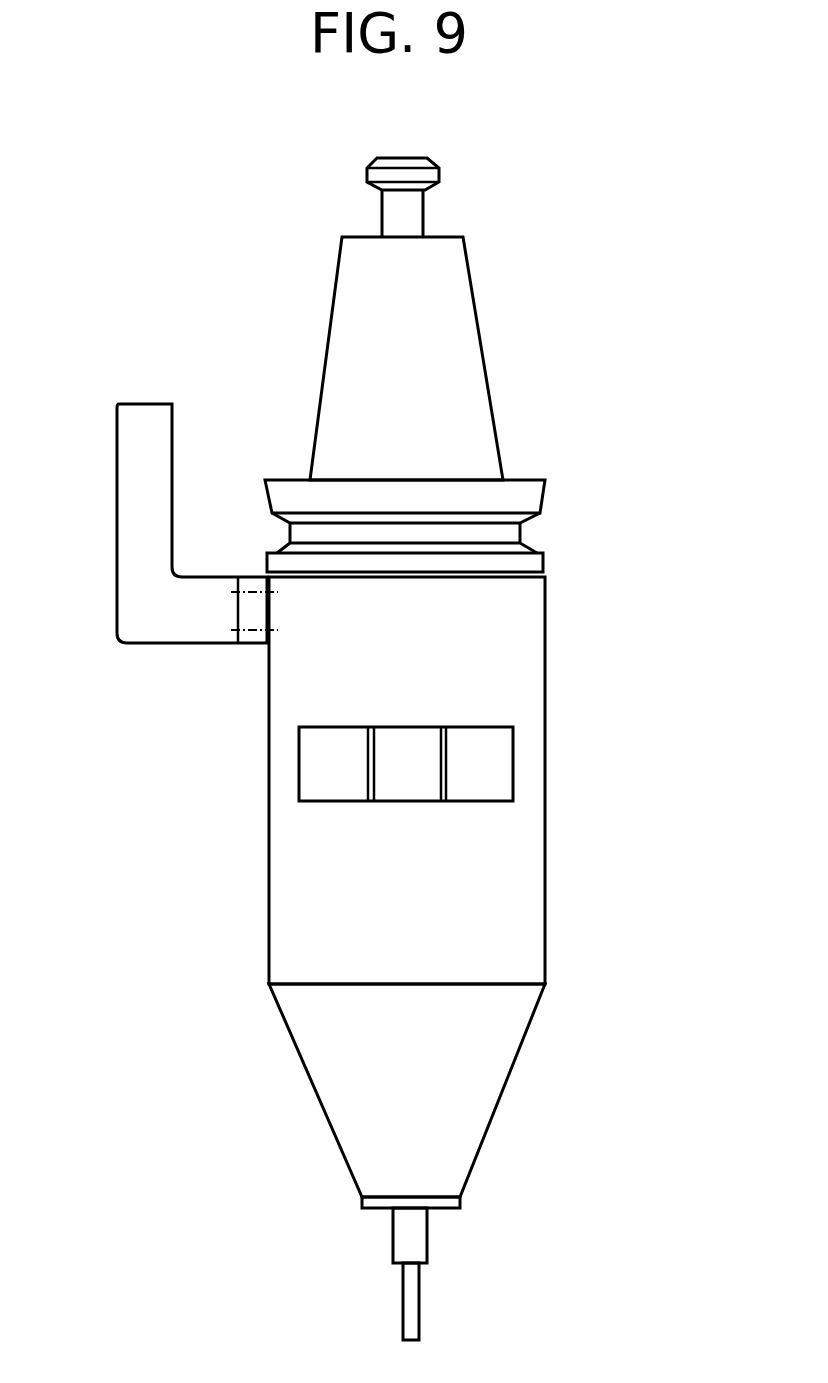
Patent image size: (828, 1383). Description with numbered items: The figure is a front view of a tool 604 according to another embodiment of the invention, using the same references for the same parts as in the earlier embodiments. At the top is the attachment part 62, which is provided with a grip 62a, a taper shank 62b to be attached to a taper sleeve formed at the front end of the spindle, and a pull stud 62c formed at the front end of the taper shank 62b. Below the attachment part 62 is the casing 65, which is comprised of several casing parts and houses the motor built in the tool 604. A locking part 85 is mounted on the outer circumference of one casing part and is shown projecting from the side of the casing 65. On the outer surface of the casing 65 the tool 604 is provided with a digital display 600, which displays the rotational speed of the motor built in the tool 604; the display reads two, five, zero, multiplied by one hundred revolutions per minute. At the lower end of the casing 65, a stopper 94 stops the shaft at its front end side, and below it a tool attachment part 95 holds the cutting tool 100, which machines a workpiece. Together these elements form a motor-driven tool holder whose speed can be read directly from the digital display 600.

The attachment part 62 is at (512, 443).
The grip 62a is at (520, 531).
The taper shank 62b is at (492, 391).
The pull stud 62c is at (415, 172).
The casing 65 is at (523, 660).
The locking part 85 is at (135, 549).
The stopper 94 is at (460, 1199).
The tool attachment part 95 is at (417, 1237).
The cutting tool 100 is at (413, 1318).
The digital display 600 is at (519, 766).
The tool 604 is at (682, 974).